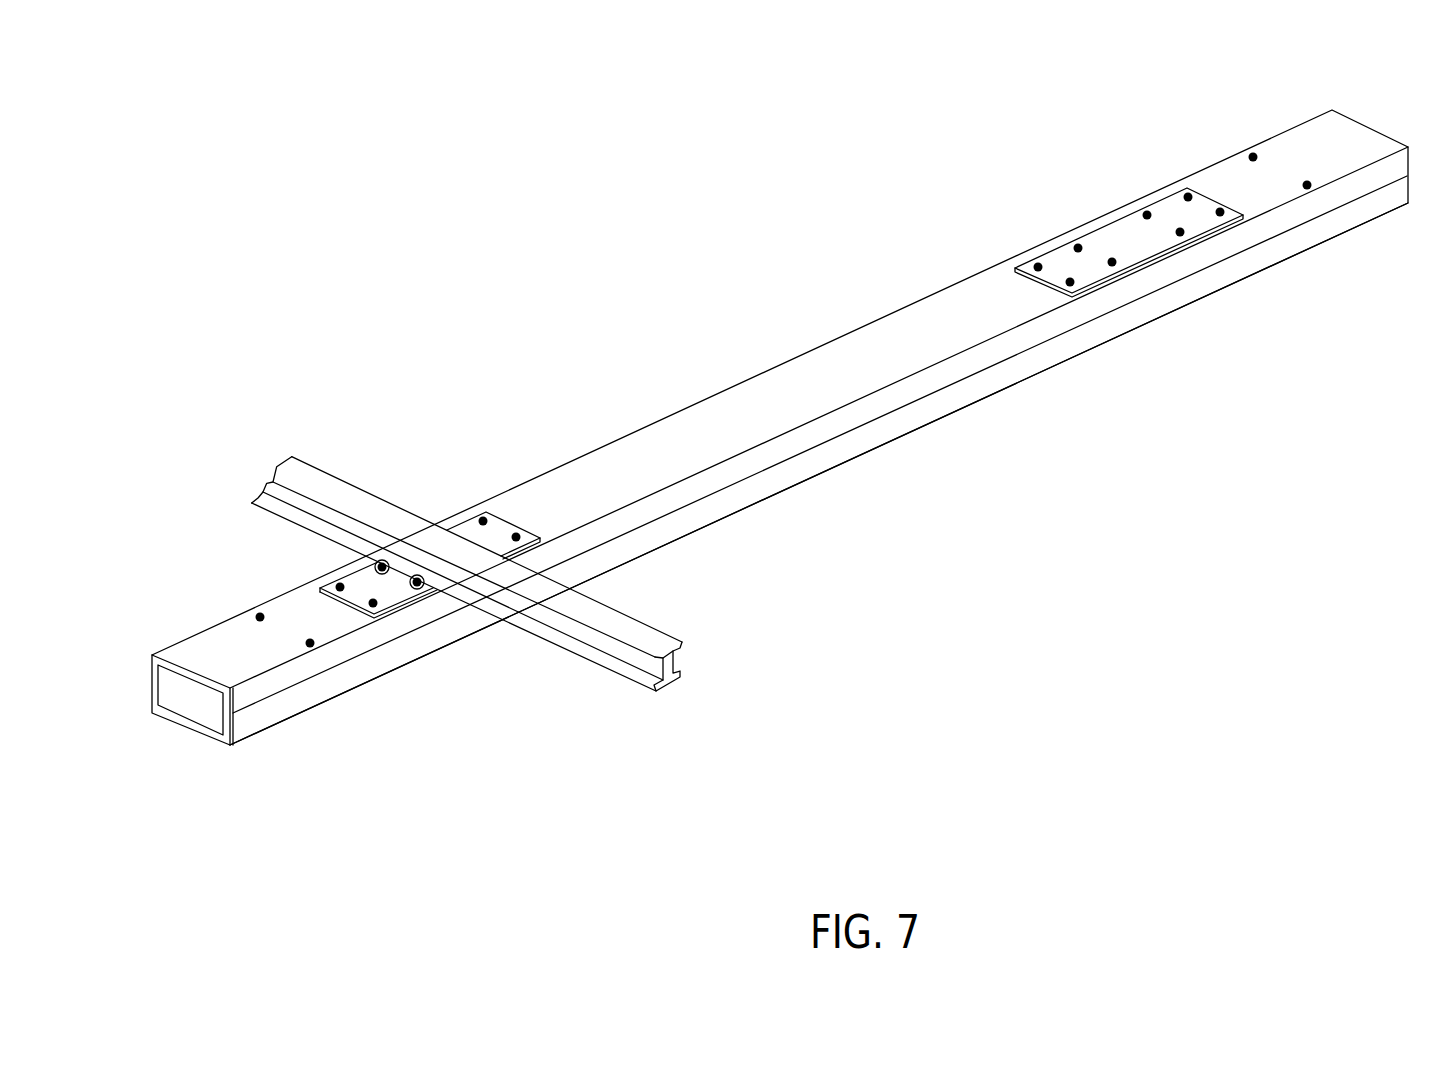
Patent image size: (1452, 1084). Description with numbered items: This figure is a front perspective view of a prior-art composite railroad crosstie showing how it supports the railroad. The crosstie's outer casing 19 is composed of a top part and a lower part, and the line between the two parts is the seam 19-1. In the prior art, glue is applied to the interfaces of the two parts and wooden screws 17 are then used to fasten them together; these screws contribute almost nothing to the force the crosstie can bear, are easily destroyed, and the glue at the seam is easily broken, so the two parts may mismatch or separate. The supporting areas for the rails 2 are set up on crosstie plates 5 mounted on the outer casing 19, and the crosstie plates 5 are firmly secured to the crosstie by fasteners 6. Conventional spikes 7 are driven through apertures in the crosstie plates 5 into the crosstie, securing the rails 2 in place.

The rail 2 is at (345, 482).
The crosstie plate 5 is at (1170, 208).
The fastener 6 is at (1220, 212).
The spike 7 is at (1078, 248).
The wooden screw 17 is at (260, 617).
The outer casing 19 is at (878, 355).
The seam 19-1 is at (848, 433).